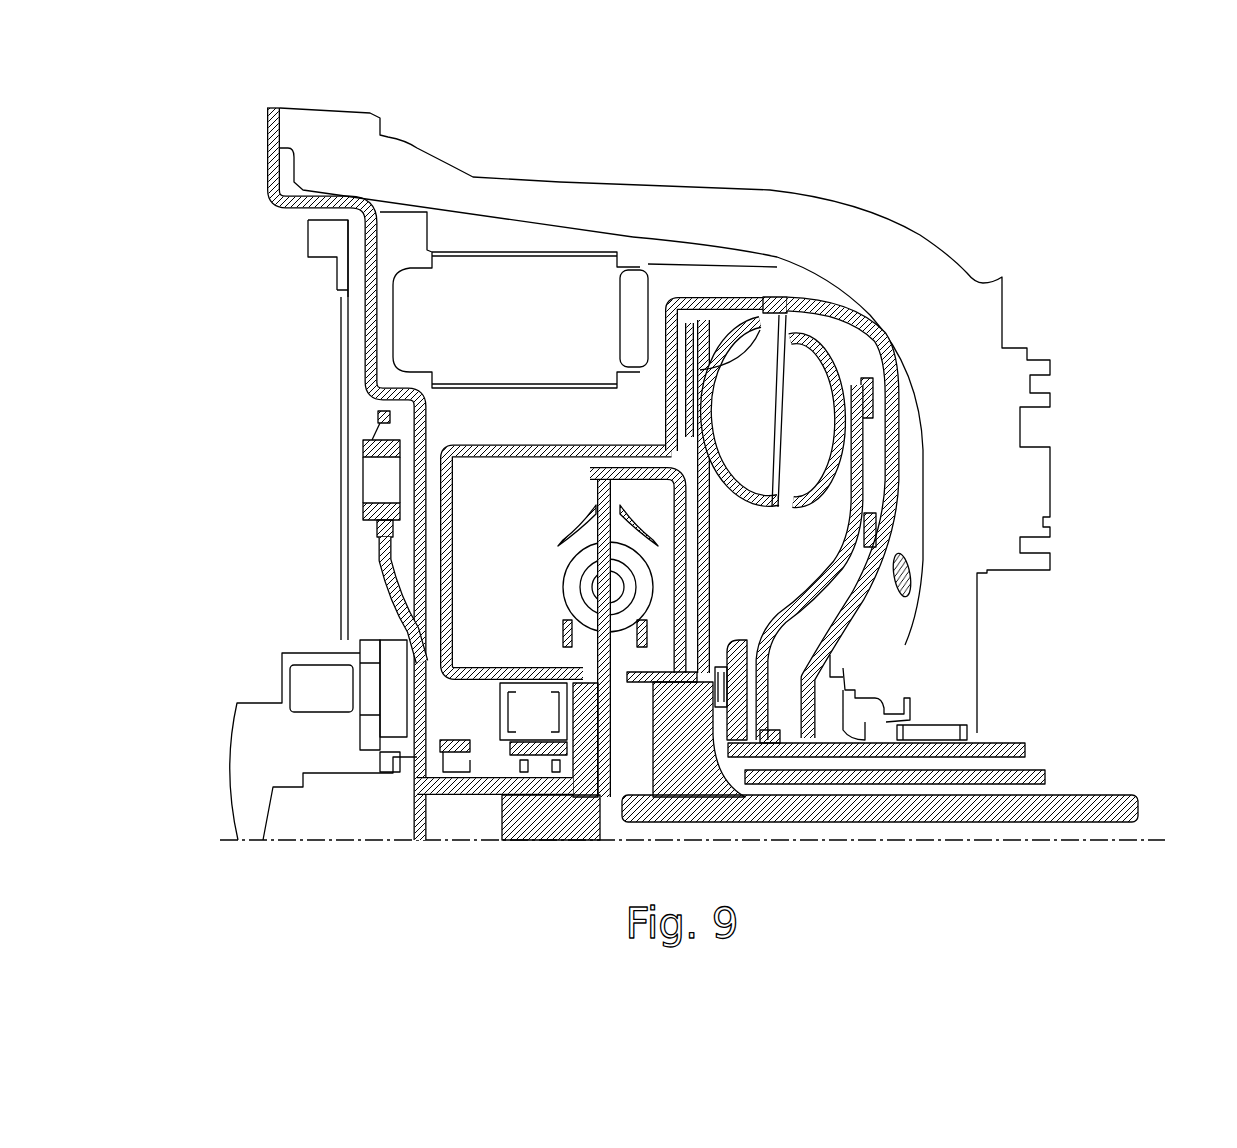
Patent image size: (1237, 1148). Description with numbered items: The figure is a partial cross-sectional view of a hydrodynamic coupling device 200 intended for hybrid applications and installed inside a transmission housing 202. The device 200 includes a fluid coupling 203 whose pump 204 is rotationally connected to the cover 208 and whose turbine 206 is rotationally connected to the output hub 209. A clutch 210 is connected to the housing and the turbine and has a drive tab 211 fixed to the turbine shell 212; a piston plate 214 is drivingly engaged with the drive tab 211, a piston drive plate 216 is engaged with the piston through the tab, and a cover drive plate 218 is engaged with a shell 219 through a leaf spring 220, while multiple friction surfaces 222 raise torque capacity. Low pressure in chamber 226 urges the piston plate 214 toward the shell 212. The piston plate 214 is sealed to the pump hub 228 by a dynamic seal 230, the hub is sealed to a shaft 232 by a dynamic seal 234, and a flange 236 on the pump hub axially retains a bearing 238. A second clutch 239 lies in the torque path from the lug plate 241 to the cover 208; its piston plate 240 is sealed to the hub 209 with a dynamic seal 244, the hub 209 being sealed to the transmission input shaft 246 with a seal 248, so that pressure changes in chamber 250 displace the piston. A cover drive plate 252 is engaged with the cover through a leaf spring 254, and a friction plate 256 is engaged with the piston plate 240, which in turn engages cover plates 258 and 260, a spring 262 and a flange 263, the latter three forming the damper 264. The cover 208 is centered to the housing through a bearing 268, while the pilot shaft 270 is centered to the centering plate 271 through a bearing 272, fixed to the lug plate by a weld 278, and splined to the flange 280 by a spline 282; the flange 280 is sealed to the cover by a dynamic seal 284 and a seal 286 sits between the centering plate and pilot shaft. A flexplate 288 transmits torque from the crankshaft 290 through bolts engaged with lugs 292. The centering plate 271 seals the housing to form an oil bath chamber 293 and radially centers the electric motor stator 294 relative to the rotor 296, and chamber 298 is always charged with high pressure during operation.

The hydrodynamic coupling device 200 is at (1060, 160).
The transmission housing 202 is at (617, 393).
The fluid coupling 203 is at (848, 335).
The pump 204 is at (721, 441).
The turbine 206 is at (788, 424).
The cover 208 is at (780, 385).
The output hub 209 is at (703, 760).
The clutch 210 is at (893, 520).
The drive tab 211 is at (828, 345).
The turbine shell 212 is at (822, 335).
The piston plate 214 is at (843, 625).
The piston drive plate 216 is at (900, 395).
The cover drive plate 218 is at (897, 478).
The shell 219 is at (945, 488).
The leaf spring 220 is at (893, 556).
The friction surfaces 222 is at (900, 433).
The chamber 226 is at (840, 582).
The pump hub 228 is at (1027, 750).
The dynamic seal 230 is at (767, 733).
The shaft 232 is at (1047, 777).
The dynamic seal 234 is at (763, 770).
The flange 236 is at (835, 672).
The bearing 238 is at (847, 733).
The clutch 239 is at (666, 282).
The piston plate 240 is at (748, 295).
The lug plate 241 is at (382, 562).
The dynamic seal 244 is at (706, 777).
The transmission input shaft 246 is at (1140, 806).
The seal 248 is at (650, 690).
The chamber 250 is at (545, 480).
The cover drive plate 252 is at (814, 280).
The leaf spring 254 is at (697, 335).
The friction plate 256 is at (688, 318).
The cover plate 258 is at (655, 395).
The cover plate 260 is at (560, 545).
The spring 262 is at (560, 587).
The flange 263 is at (597, 655).
The damper 264 is at (528, 556).
The bearing 268 is at (540, 750).
The pilot shaft 270 is at (478, 790).
The centering plate 271 is at (370, 307).
The bearing 272 is at (477, 793).
The weld 278 is at (433, 773).
The flange 280 is at (545, 740).
The spline 282 is at (510, 793).
The dynamic seal 284 is at (578, 807).
The seal 286 is at (380, 505).
The flexplate 288 is at (328, 237).
The crankshaft 290 is at (258, 747).
The lugs 292 is at (383, 473).
The chamber 293 is at (398, 243).
The electric motor stator 294 is at (470, 280).
The rotor 296 is at (572, 395).
The chamber 298 is at (845, 645).